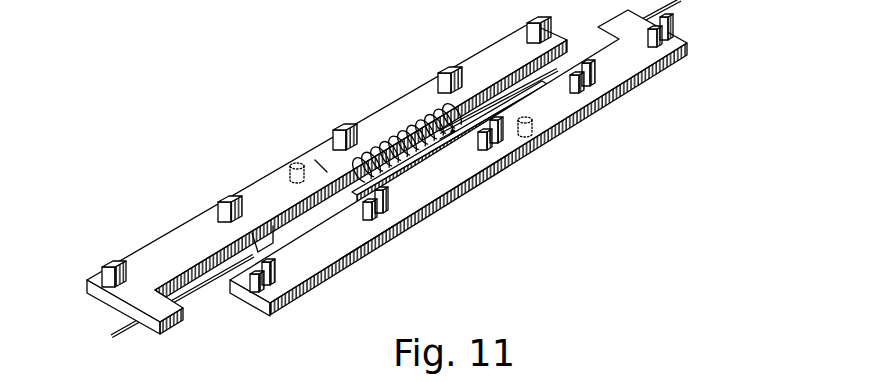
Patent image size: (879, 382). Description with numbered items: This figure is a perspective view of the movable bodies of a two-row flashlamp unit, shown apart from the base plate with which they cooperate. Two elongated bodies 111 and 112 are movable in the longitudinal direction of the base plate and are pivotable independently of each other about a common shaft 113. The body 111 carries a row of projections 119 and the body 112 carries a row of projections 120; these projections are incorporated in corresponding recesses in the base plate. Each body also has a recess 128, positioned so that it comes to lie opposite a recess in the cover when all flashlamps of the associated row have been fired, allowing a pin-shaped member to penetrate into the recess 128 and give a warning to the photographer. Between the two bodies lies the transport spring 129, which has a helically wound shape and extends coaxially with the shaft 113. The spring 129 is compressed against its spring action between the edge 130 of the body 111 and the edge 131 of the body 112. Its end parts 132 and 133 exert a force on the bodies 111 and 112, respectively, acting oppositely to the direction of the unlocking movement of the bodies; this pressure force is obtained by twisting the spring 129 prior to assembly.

The body 111 is at (180, 242).
The body 112 is at (343, 267).
The shaft 113 is at (125, 328).
The projections 119 is at (527, 25).
The projections 120 is at (292, 298).
The recess 128 is at (292, 166).
The transport spring 129 is at (397, 143).
The edge 130 is at (453, 132).
The edge 131 is at (373, 248).
The end part 132 is at (317, 163).
The end part 133 is at (490, 172).